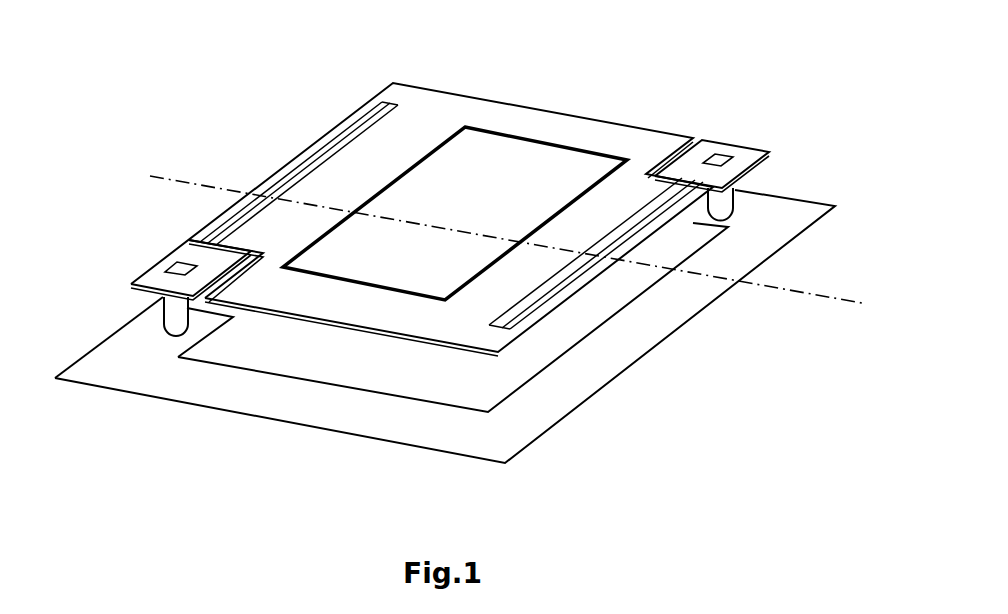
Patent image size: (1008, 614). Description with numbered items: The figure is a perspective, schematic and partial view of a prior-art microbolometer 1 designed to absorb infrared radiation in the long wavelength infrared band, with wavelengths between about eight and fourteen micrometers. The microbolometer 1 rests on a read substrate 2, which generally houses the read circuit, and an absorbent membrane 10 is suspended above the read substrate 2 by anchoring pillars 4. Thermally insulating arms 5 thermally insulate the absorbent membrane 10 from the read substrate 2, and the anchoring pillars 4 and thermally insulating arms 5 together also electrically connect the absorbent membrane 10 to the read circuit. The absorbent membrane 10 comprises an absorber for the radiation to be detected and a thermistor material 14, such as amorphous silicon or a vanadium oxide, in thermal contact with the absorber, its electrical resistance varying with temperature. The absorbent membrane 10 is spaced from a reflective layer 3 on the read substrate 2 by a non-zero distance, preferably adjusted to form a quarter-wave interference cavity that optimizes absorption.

The microbolometer 1 is at (150, 47).
The read substrate 2 is at (810, 226).
The reflective layer 3 is at (598, 338).
The anchoring pillars 4 is at (160, 316).
The thermally insulating arms 5 is at (200, 225).
The absorbent membrane 10 is at (636, 121).
The thermistor material 14 is at (508, 131).